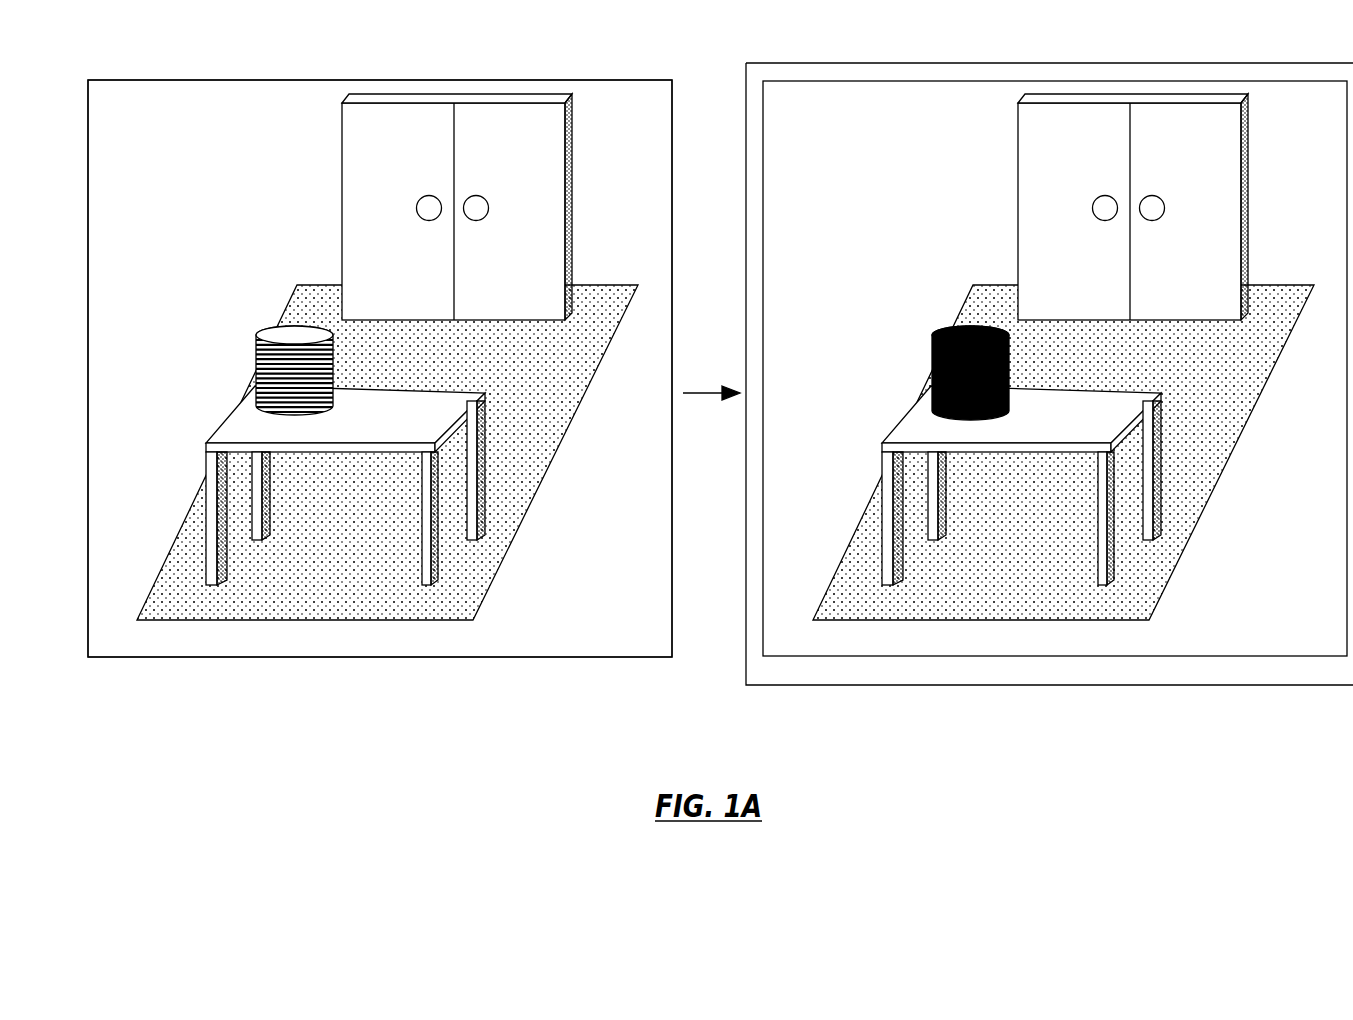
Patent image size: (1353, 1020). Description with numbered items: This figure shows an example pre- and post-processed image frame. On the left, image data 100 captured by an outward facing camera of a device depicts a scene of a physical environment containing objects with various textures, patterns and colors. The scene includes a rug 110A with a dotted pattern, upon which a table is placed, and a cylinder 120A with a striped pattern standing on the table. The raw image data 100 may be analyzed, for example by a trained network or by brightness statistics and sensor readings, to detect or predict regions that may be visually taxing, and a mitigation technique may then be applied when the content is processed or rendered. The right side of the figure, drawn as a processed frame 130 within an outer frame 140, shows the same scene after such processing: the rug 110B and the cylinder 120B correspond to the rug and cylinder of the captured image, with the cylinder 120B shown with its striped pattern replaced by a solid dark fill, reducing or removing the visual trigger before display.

The image data 100 is at (378, 80).
The rug 110A is at (488, 592).
The cylinder 120A is at (258, 330).
The rendered virtual scene 130 is at (1055, 81).
The display device 140 is at (1197, 63).
The virtual floor 110B is at (1163, 587).
The virtual object 120B is at (933, 332).